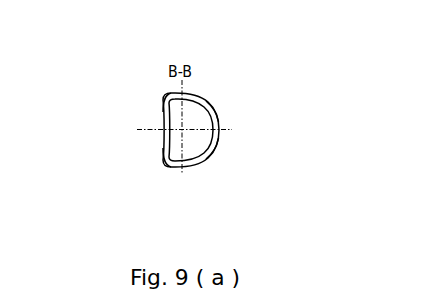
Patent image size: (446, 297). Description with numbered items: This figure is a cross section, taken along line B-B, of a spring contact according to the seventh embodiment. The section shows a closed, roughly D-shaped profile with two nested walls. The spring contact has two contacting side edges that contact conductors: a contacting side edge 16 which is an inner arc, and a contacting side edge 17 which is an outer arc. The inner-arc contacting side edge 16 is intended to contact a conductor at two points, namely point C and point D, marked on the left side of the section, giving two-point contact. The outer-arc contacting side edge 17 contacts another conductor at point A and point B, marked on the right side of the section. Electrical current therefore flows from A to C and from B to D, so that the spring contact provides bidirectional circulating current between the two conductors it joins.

The contacting side edge 16 is at (162, 117).
The contacting side edge 17 is at (218, 120).
The contact point A is at (216, 112).
The contact point B is at (216, 148).
The contact point C is at (162, 106).
The contact point D is at (162, 152).